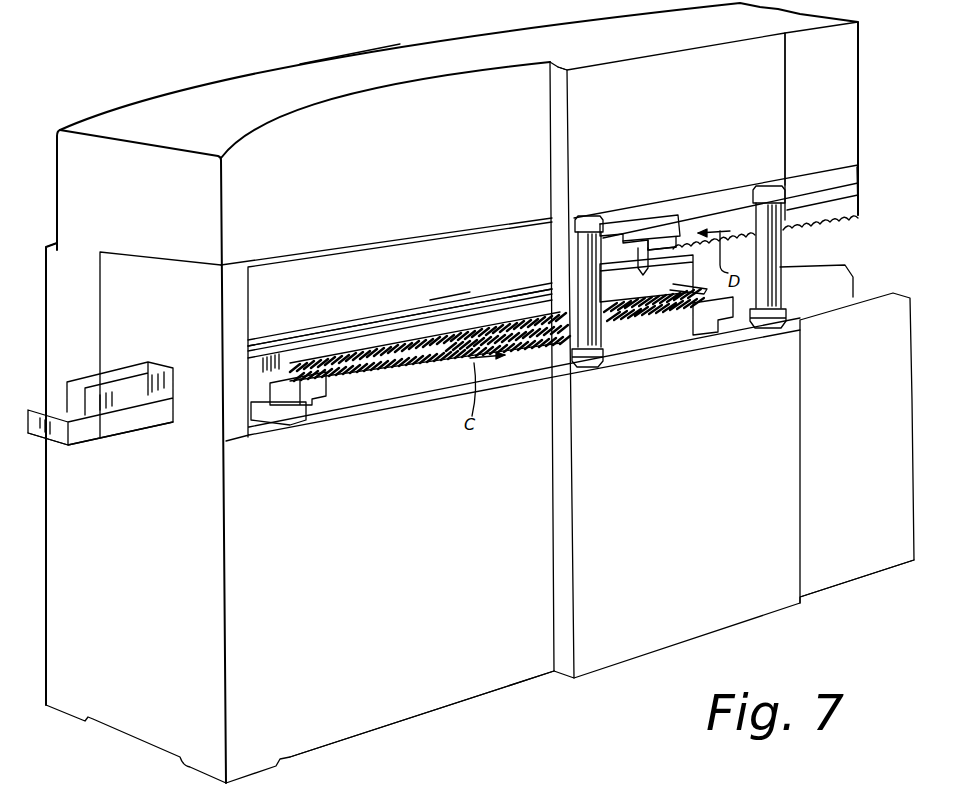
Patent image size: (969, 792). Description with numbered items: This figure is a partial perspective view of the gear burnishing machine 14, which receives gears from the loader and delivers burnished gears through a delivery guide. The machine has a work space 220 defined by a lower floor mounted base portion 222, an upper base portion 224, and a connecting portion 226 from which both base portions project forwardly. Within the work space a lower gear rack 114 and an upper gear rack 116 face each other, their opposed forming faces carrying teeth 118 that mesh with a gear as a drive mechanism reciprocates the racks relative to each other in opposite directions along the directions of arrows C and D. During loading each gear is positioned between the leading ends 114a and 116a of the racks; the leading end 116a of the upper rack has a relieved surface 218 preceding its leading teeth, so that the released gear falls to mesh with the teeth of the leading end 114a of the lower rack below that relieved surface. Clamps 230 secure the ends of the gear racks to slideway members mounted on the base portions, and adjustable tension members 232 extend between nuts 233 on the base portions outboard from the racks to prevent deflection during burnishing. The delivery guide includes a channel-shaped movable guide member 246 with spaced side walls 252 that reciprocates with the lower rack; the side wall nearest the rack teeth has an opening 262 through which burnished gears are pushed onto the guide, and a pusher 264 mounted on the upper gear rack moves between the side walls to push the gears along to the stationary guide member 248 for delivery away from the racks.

The gear burnishing machine 14 is at (283, 52).
The upper base portion 224 is at (505, 95).
The work space 220 is at (515, 245).
The connecting portion 226 is at (50, 282).
The lower floor mounted base portion 222 is at (473, 681).
The upper gear rack 116 is at (812, 212).
The leading end of the upper rack 116a is at (667, 233).
The movable guide member 246 is at (362, 325).
The side walls 252 is at (313, 343).
The lower gear rack 114 is at (537, 357).
The teeth 118 is at (432, 358).
The clamps 230 is at (310, 405).
The leading end of the lower rack 114a is at (688, 308).
The pusher 264 is at (102, 413).
The stationary guide member 248 is at (133, 428).
The opening 262 is at (600, 268).
The relieved surface 218 is at (678, 250).
The adjustable tension members 232 is at (600, 323).
The nuts 233 is at (585, 218).